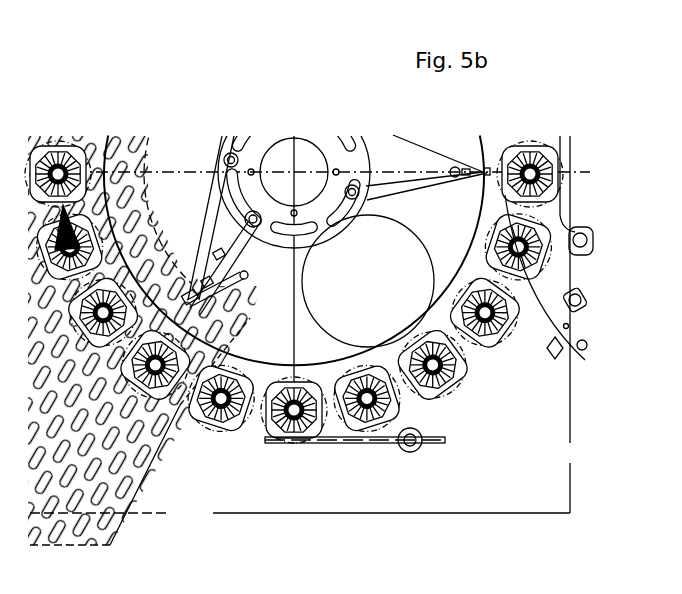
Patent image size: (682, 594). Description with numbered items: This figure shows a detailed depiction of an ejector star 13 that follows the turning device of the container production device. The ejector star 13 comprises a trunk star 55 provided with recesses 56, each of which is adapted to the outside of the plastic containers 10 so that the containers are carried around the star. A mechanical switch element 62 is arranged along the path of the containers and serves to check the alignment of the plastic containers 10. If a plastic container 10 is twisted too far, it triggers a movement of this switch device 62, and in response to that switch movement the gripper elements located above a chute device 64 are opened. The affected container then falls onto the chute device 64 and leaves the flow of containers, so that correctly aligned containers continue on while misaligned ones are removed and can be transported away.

The plastic container 10 is at (465, 368).
The ejector star 13 is at (167, 110).
The trunk star 55 is at (421, 272).
The recess 56 is at (486, 228).
The mechanical switch element 62 is at (327, 444).
The chute device 64 is at (137, 462).